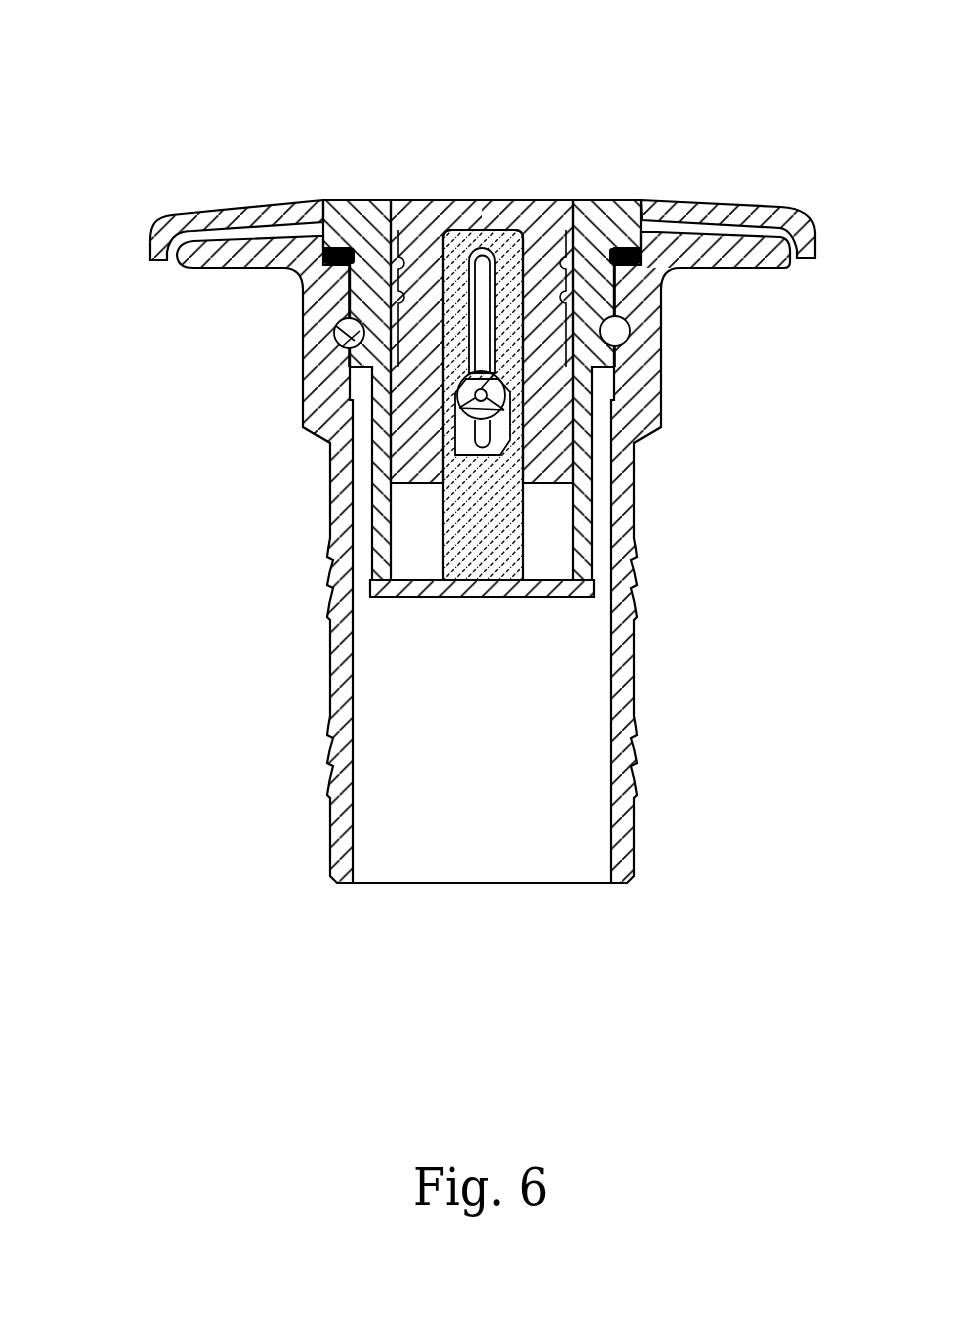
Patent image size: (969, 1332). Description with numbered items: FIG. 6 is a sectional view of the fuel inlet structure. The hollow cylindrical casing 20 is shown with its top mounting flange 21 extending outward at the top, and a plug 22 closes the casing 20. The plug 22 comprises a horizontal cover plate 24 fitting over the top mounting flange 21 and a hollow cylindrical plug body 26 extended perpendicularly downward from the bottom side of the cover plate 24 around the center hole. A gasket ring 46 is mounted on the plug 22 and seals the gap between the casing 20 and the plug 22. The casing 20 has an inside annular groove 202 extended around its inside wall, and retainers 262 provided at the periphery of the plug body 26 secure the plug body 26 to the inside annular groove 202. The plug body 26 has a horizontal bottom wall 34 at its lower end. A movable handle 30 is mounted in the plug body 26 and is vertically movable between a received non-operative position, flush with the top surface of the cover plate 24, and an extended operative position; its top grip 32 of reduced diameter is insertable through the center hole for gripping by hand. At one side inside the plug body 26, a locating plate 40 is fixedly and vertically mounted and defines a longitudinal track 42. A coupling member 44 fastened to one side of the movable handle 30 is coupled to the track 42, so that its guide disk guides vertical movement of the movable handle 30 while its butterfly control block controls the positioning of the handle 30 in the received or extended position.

The hollow cylindrical casing 20 is at (622, 625).
The top mounting flange 21 is at (230, 247).
The plug 22 is at (599, 204).
The horizontal cover plate 24 is at (688, 213).
The hollow cylindrical plug body 26 is at (380, 520).
The movable handle 30 is at (423, 253).
The top grip 32 is at (482, 199).
The horizontal bottom wall 34 is at (530, 597).
The locating plate 40 is at (490, 513).
The longitudinal track 42 is at (497, 353).
The coupling member 44 is at (497, 410).
The gasket ring 46 is at (340, 248).
The inside annular groove 202 is at (337, 327).
The retainer 262 is at (350, 337).